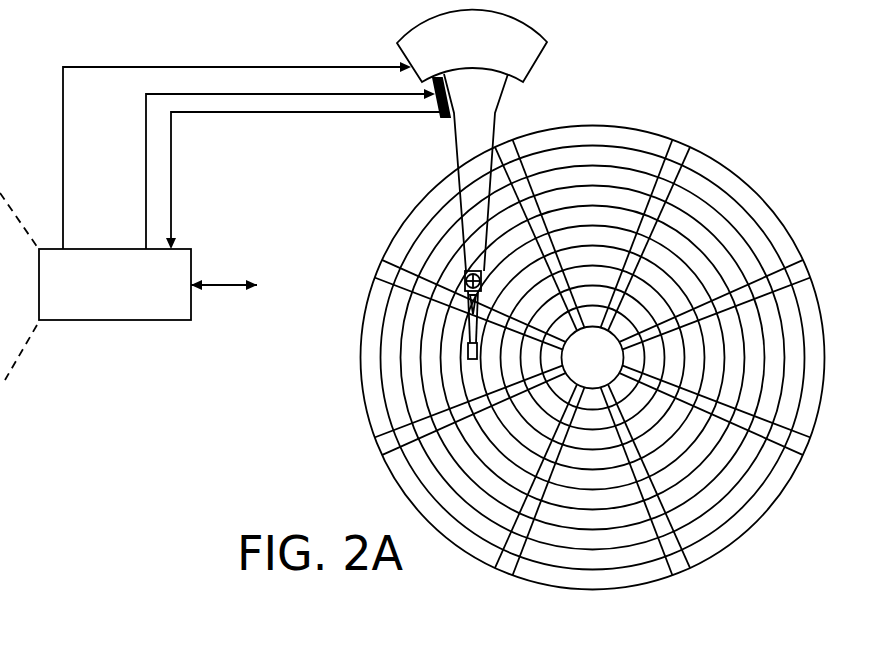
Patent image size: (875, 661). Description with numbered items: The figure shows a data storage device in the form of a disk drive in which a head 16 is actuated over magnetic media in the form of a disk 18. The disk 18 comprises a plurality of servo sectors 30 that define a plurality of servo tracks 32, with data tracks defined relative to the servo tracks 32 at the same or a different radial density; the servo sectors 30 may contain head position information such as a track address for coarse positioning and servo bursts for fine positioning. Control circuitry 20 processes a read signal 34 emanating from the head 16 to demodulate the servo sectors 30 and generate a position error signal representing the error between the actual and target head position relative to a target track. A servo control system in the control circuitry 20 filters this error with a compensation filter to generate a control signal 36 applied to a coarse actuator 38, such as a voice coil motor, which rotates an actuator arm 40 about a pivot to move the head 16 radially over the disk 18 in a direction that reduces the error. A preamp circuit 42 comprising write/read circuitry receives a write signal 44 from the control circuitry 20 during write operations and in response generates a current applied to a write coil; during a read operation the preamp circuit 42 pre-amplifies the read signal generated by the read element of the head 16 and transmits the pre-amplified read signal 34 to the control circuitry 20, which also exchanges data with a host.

The head 16 is at (460, 357).
The disk 18 is at (594, 353).
The control circuitry 20 is at (114, 320).
The servo sectors 30 is at (594, 366).
The servo tracks 32 is at (583, 155).
The read signal 34 is at (171, 163).
The control signal 36 is at (63, 128).
The coarse actuator 38 is at (547, 38).
The actuator arm 40 is at (457, 160).
The preamp circuit 42 is at (440, 115).
The write signal 44 is at (146, 163).